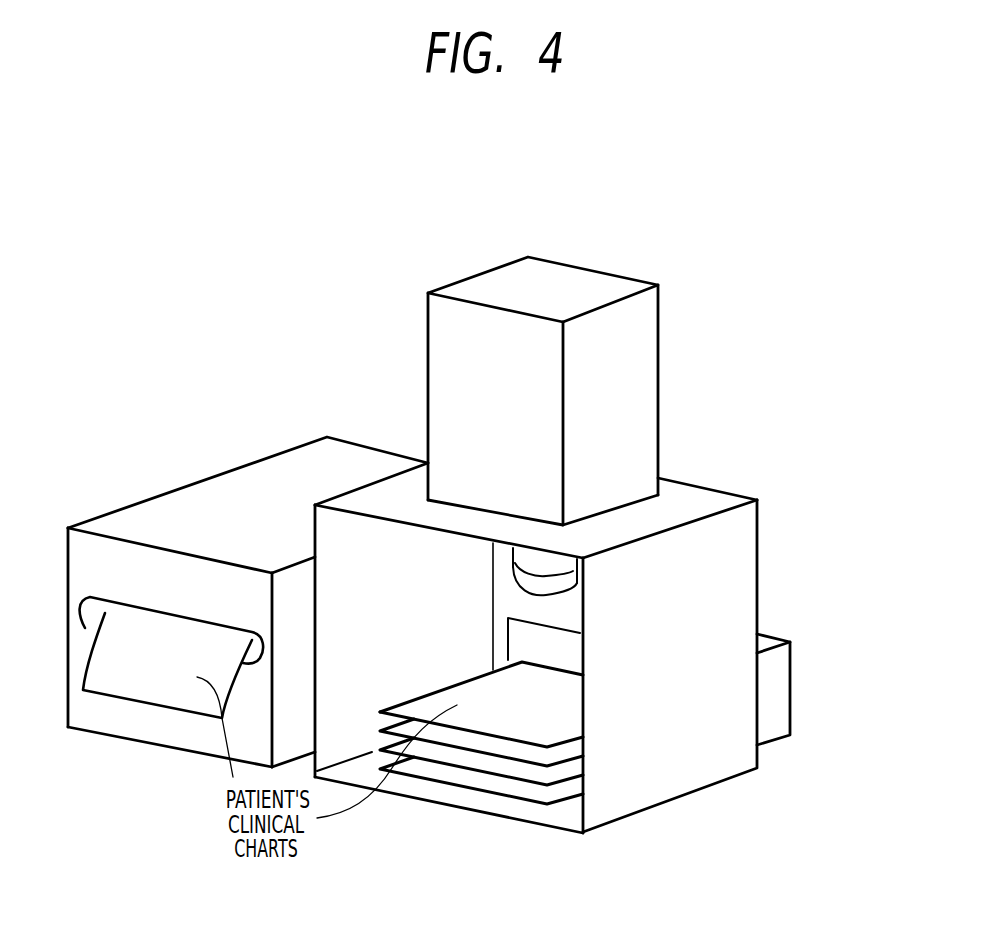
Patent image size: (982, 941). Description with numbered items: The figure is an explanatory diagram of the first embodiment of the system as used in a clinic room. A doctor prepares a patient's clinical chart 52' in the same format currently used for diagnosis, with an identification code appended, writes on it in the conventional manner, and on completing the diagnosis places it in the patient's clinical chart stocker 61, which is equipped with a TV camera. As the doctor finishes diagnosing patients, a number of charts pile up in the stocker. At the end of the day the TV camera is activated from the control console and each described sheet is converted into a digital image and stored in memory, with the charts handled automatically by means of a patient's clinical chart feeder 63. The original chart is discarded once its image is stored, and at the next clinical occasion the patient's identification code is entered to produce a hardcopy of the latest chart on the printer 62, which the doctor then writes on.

The patient's clinical chart stocker 61 is at (732, 577).
The patient's clinical chart 52' is at (481, 757).
The printer 62 is at (236, 487).
The patient's clinical chart feeder 63 is at (773, 728).